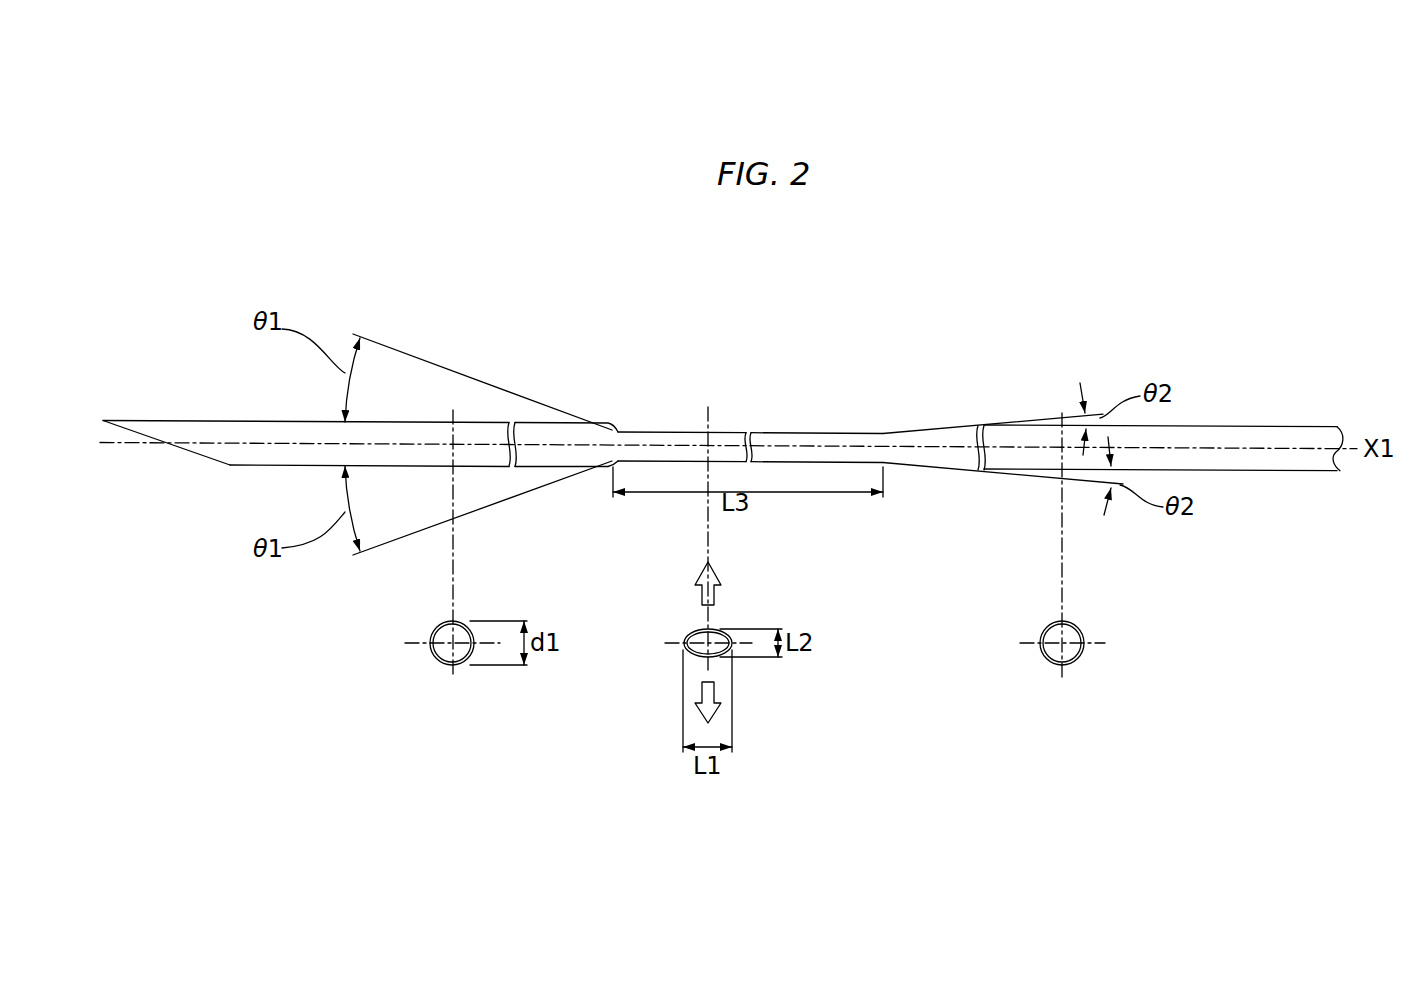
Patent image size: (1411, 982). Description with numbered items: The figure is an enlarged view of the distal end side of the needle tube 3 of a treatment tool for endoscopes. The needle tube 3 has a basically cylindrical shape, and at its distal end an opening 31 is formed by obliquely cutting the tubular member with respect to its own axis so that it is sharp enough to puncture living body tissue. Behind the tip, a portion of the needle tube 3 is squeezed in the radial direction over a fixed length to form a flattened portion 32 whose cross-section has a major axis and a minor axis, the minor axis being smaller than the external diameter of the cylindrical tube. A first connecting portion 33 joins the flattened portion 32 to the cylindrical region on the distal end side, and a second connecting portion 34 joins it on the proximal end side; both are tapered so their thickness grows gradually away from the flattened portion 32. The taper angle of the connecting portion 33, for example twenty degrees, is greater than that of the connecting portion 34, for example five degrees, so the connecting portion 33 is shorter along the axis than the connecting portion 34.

The needle tube 3 is at (872, 350).
The opening 31 is at (162, 450).
The flattened portion 32 is at (784, 428).
The first connecting portion 33 is at (620, 424).
The second connecting portion 34 is at (892, 424).